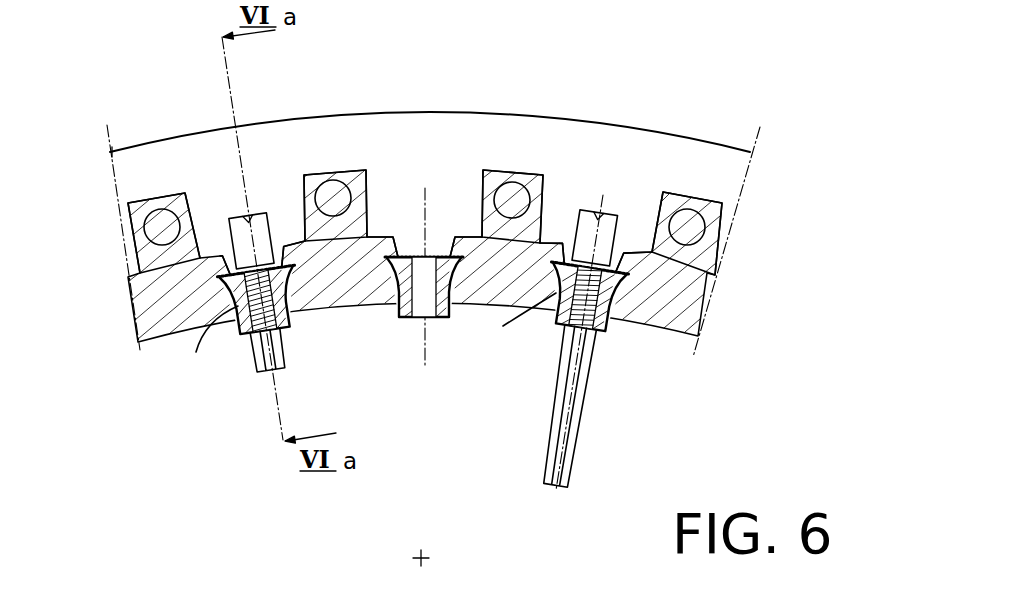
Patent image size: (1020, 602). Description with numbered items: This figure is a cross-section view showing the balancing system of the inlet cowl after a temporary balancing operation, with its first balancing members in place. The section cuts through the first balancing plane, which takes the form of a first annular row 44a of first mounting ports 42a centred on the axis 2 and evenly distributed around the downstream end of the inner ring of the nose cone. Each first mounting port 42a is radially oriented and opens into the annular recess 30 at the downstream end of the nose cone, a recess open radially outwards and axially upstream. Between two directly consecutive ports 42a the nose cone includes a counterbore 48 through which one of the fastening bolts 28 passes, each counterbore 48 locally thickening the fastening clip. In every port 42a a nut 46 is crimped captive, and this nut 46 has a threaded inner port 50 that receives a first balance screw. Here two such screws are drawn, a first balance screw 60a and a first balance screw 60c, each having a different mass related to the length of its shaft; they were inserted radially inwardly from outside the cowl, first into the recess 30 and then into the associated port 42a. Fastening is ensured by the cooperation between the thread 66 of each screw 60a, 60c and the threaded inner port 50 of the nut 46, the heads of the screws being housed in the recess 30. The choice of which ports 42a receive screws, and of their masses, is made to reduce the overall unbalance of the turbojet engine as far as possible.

The axis 2 is at (421, 557).
The fastening bolts 28 is at (155, 205).
The annular recess 30 is at (425, 172).
The first mounting ports 42a is at (273, 250).
The first annular row 44a is at (741, 288).
The nut 46 is at (247, 333).
The counterbore 48 is at (158, 218).
The threaded inner port 50 is at (285, 333).
The first balance screw 60a is at (285, 378).
The first balance screw 60c is at (584, 472).
The thread 66 is at (203, 333).